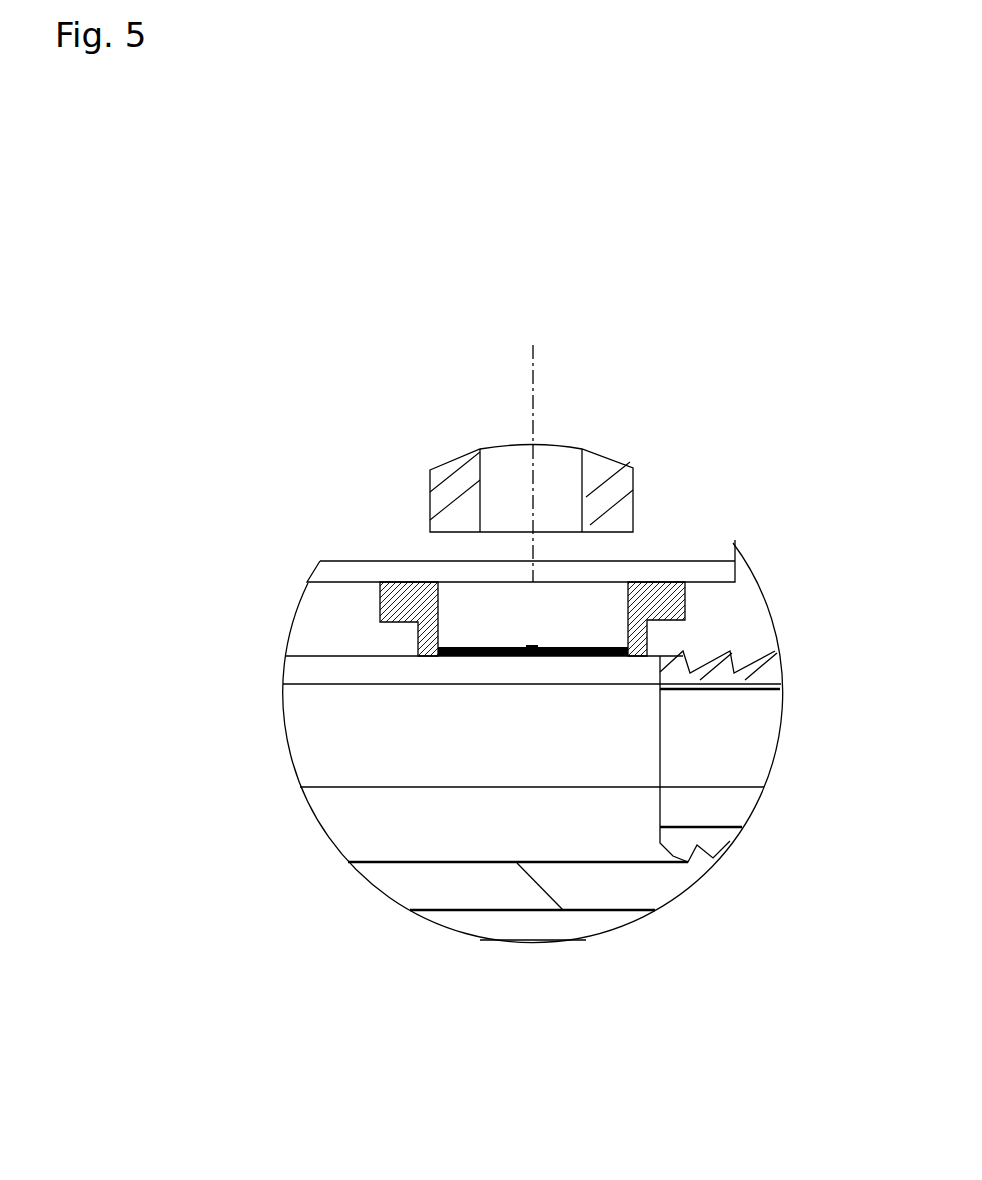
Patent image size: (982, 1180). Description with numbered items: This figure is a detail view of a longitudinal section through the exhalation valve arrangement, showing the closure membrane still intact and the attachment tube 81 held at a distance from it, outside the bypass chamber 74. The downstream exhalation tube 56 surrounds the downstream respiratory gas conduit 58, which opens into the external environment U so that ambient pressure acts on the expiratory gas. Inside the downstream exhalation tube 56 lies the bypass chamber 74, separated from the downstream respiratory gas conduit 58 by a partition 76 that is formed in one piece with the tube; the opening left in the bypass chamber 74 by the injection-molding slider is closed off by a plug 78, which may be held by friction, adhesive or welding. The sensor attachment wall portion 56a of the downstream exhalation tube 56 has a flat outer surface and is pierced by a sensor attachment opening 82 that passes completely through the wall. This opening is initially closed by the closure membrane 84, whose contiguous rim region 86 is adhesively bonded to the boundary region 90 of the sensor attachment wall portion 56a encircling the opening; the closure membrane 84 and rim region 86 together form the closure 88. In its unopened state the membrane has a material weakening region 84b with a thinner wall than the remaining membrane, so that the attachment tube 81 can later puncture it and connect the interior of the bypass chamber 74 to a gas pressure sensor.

The downstream exhalation tube 56 is at (748, 598).
The sensor attachment wall portion 56a is at (300, 588).
The downstream respiratory gas conduit 58 is at (502, 922).
The bypass chamber 74 is at (422, 768).
The partition 76 is at (425, 885).
The plug 78 is at (764, 676).
The attachment tube 81 is at (598, 465).
The sensor attachment opening 82 is at (578, 617).
The closure membrane 84 is at (470, 640).
The material weakening region 84b is at (529, 636).
The rim region 86 is at (403, 598).
The closure 88 is at (442, 383).
The boundary region 90 is at (398, 642).
The external environment U is at (767, 507).